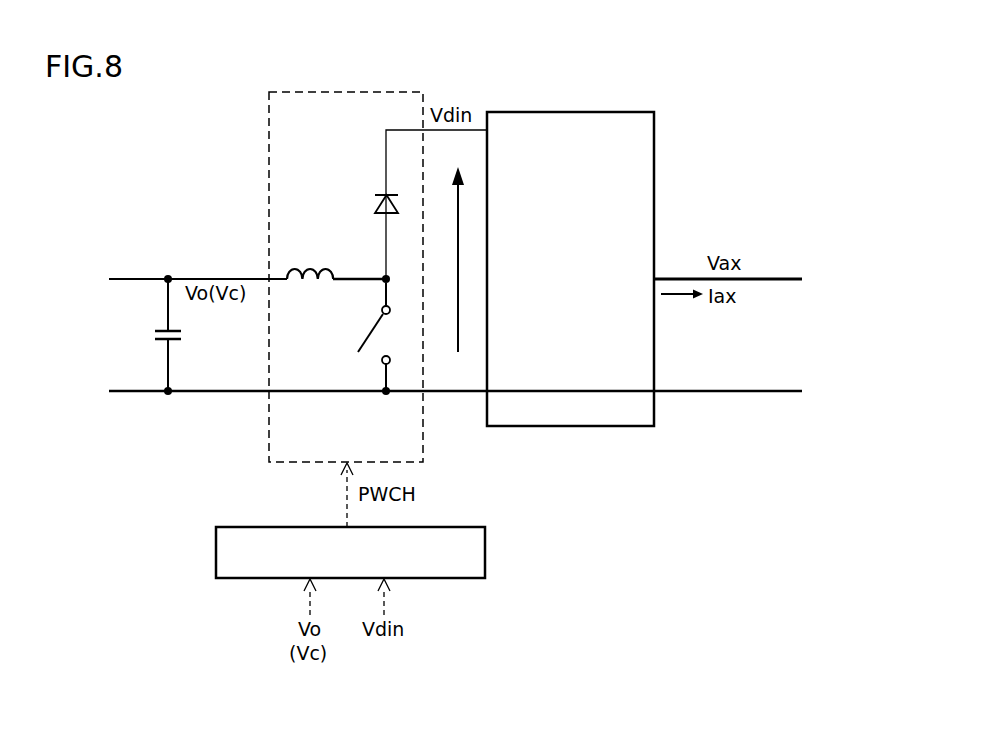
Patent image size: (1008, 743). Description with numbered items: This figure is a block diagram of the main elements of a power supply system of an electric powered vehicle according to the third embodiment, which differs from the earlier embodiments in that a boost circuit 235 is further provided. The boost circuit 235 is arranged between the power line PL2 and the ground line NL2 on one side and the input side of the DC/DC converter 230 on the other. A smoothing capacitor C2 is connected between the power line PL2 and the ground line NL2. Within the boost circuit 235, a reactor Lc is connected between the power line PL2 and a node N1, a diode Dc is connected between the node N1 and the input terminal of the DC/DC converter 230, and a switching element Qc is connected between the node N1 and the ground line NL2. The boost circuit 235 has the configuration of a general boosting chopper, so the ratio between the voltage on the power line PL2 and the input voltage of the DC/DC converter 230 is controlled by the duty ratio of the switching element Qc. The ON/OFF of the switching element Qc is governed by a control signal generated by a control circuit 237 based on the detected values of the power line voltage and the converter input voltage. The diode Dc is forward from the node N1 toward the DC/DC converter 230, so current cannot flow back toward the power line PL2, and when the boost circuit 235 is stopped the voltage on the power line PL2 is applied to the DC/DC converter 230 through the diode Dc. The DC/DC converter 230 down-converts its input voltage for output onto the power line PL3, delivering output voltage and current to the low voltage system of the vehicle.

The boost circuit 235 is at (293, 464).
The DC/DC converter 230 is at (540, 428).
The control circuit 237 is at (486, 557).
The power line PL2 is at (128, 277).
The ground line NL2 is at (130, 394).
The smoothing capacitor C2 is at (185, 335).
The reactor Lc is at (310, 268).
The diode Dc is at (372, 211).
The switching element Qc is at (372, 352).
The node N1 is at (434, 212).
The power line PL3 is at (766, 278).